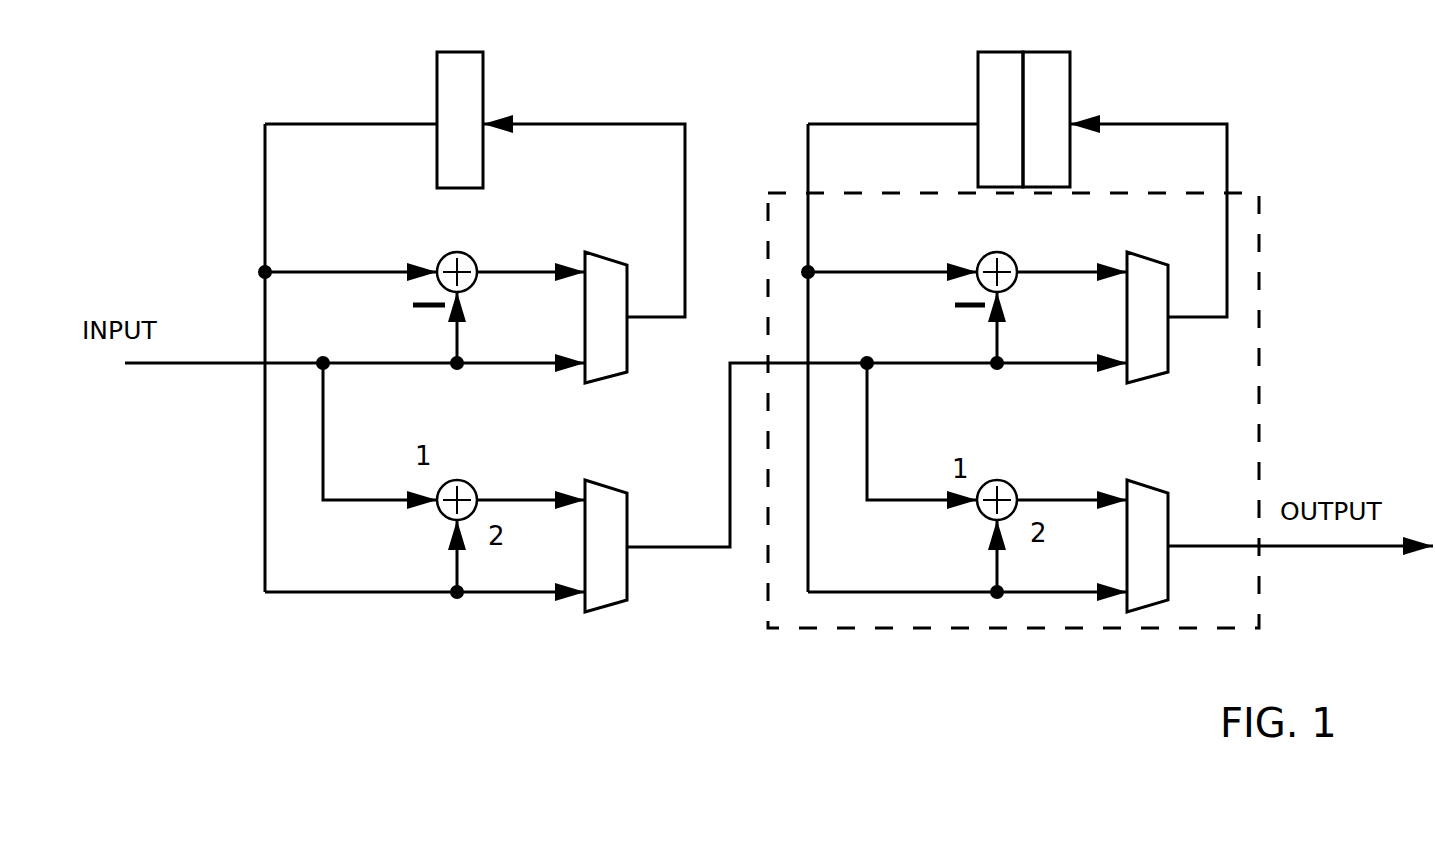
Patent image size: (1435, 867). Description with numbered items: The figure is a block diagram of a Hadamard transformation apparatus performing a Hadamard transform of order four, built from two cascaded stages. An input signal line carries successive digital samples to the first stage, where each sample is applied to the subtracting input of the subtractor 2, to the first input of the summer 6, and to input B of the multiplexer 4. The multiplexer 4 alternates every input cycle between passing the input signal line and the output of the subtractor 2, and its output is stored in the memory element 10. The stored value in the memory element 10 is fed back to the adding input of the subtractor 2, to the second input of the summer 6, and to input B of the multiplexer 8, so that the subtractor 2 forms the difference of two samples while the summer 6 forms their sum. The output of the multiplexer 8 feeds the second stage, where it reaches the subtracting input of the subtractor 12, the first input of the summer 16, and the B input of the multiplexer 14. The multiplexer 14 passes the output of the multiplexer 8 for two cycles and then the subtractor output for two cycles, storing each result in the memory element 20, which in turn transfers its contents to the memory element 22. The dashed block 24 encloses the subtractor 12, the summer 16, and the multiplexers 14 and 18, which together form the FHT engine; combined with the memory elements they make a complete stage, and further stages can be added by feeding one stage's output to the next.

The subtractor 2 is at (459, 252).
The multiplexer 4 is at (600, 252).
The summer 6 is at (459, 480).
The multiplexer 8 is at (600, 480).
The memory element 10 is at (457, 52).
The subtractor 12 is at (1000, 252).
The multiplexer 14 is at (1148, 252).
The summer 16 is at (1000, 480).
The multiplexer 18 is at (1148, 480).
The memory element 20 is at (1065, 52).
The memory element 22 is at (993, 52).
The block 24 is at (1245, 193).